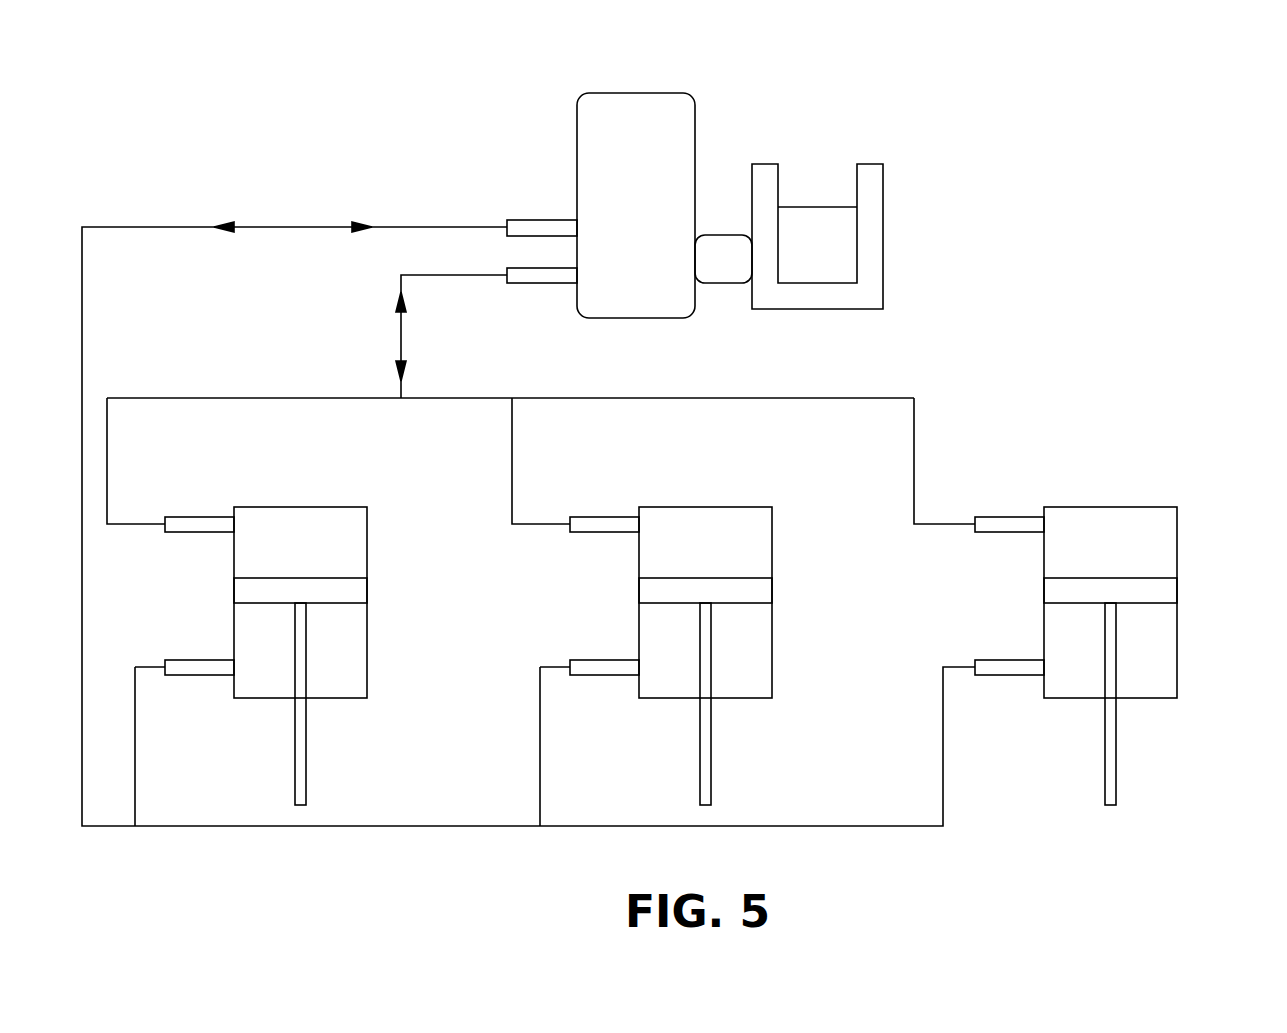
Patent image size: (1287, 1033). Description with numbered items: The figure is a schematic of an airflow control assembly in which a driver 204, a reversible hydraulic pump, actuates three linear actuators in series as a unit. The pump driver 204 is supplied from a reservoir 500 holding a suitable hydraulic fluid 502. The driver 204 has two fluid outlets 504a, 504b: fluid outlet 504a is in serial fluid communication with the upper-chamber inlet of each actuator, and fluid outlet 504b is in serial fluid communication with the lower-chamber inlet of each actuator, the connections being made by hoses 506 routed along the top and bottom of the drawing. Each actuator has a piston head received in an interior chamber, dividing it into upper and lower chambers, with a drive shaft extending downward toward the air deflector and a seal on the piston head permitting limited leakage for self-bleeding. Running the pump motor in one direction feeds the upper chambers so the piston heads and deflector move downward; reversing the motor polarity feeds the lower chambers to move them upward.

The driver 204 is at (664, 84).
The reservoir 500 is at (875, 183).
The hydraulic fluid 502 is at (836, 244).
The fluid outlet 504a is at (530, 277).
The fluid outlet 504b is at (532, 224).
The hose 506 is at (143, 225).